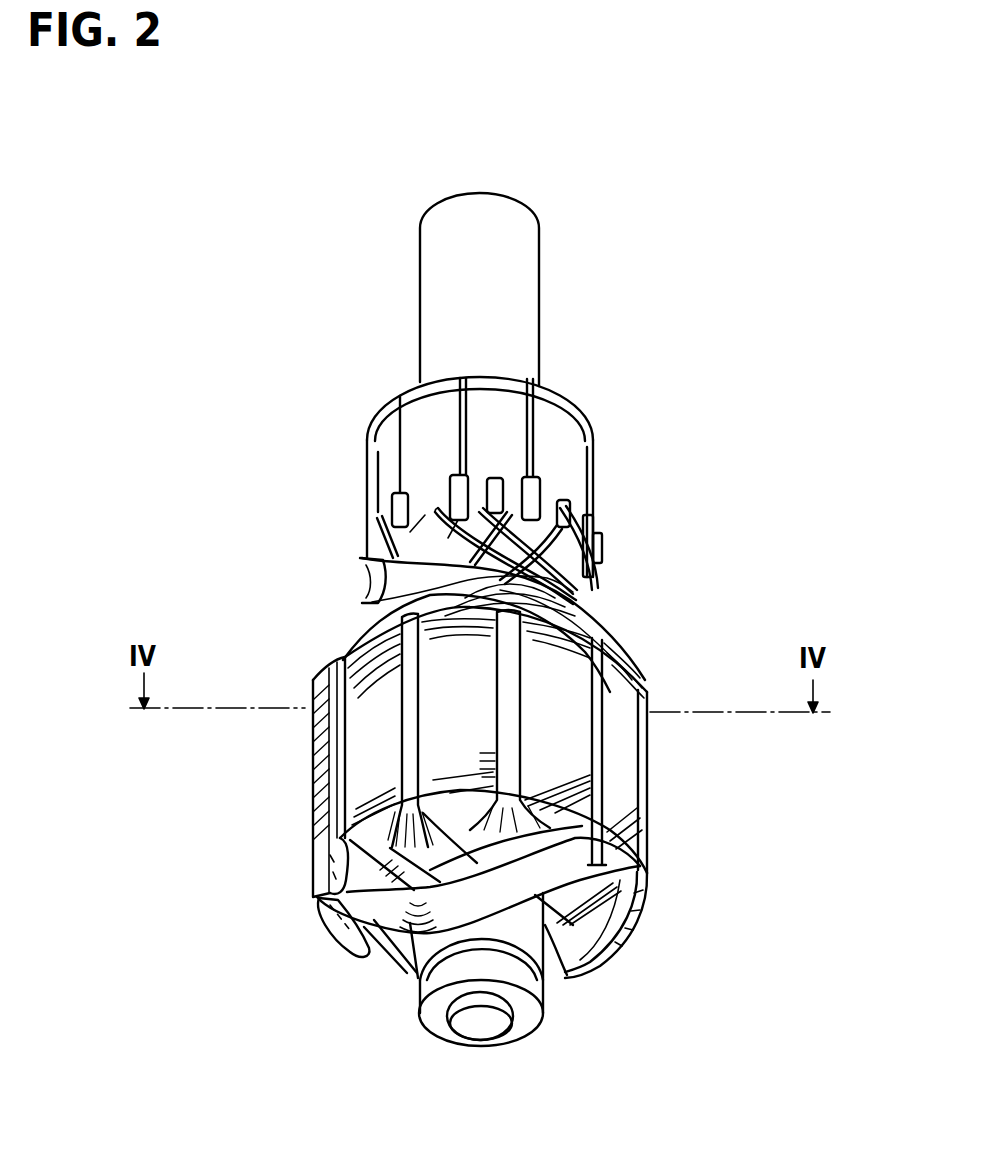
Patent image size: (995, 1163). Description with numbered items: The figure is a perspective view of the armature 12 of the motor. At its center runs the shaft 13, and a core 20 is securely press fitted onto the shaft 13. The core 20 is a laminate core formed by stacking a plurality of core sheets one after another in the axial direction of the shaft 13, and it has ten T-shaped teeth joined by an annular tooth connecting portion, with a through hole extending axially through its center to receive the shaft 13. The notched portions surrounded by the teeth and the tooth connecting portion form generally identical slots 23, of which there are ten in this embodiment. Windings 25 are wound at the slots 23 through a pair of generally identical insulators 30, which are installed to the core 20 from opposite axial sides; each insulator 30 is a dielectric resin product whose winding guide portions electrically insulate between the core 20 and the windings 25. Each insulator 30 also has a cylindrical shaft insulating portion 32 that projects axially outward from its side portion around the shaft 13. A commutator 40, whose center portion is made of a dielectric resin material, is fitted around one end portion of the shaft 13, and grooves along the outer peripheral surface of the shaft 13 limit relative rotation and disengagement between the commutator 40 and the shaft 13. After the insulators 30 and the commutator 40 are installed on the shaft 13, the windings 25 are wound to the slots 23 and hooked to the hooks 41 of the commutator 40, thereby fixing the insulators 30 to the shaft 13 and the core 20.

The armature 12 is at (305, 656).
The shaft 13 is at (539, 330).
The core 20 is at (538, 752).
The slots 23 is at (510, 688).
The windings 25 is at (592, 586).
The insulator 30 is at (480, 1016).
The shaft insulating portion 32 is at (547, 1004).
The commutator 40 is at (460, 490).
The hooks 41 is at (500, 476).